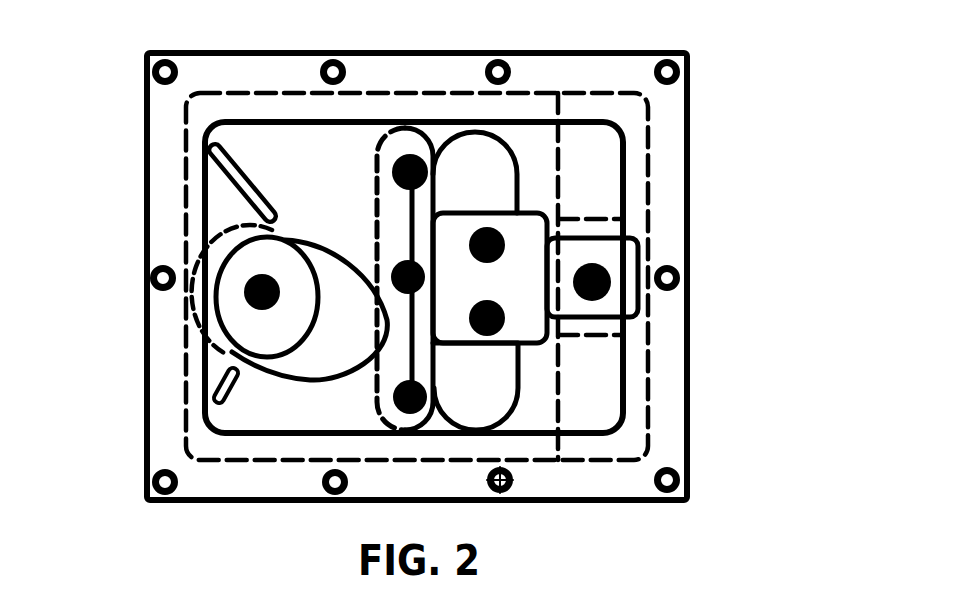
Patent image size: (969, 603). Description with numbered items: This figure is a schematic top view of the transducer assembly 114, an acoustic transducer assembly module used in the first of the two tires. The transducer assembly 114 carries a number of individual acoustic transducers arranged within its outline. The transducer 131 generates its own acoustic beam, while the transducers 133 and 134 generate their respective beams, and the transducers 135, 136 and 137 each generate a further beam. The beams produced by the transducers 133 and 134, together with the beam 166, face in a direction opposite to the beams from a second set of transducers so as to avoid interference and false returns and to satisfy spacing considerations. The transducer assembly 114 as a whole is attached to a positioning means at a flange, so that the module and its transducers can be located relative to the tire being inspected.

The transducer assembly 114 is at (690, 172).
The transducer 131 is at (250, 287).
The transducer 133 is at (411, 153).
The transducer 134 is at (428, 396).
The transducer 135 is at (604, 268).
The transducer 136 is at (500, 234).
The transducer 137 is at (503, 317).
The beam 166 is at (417, 297).